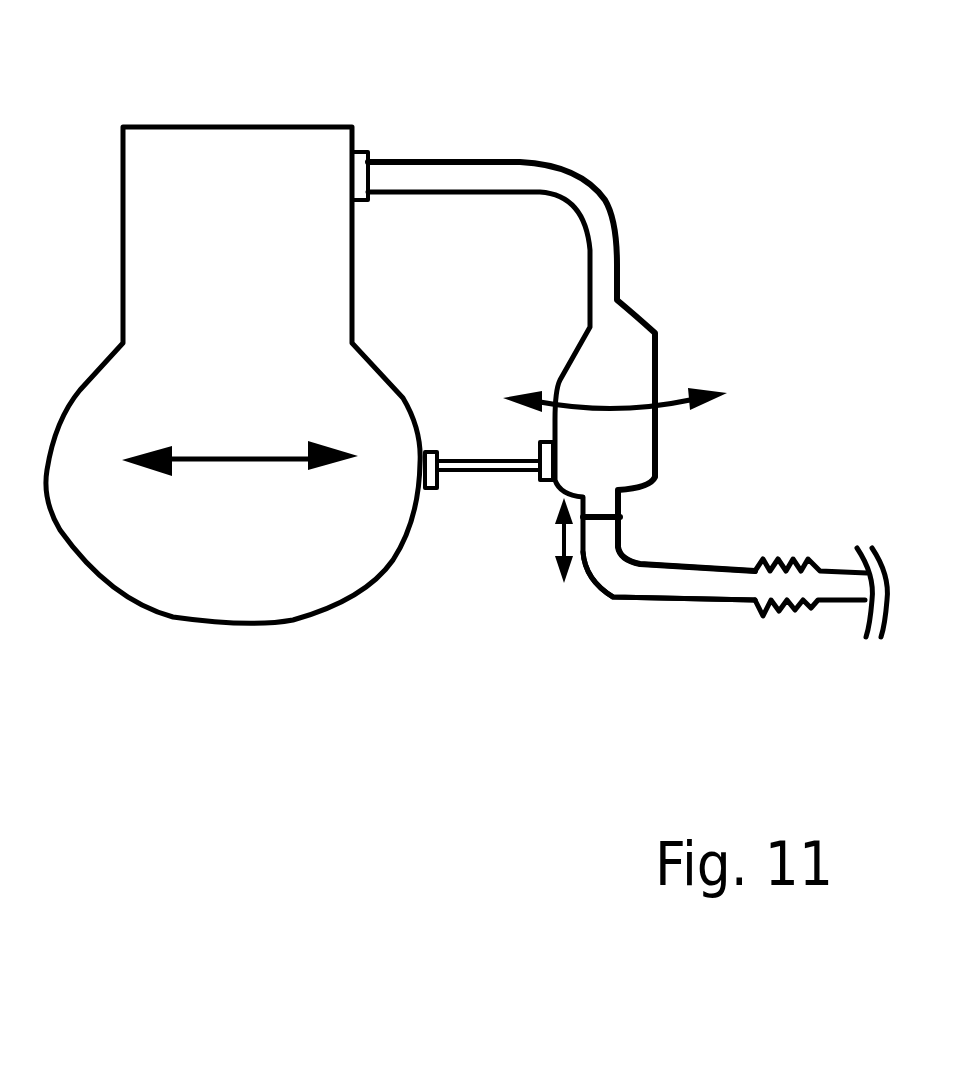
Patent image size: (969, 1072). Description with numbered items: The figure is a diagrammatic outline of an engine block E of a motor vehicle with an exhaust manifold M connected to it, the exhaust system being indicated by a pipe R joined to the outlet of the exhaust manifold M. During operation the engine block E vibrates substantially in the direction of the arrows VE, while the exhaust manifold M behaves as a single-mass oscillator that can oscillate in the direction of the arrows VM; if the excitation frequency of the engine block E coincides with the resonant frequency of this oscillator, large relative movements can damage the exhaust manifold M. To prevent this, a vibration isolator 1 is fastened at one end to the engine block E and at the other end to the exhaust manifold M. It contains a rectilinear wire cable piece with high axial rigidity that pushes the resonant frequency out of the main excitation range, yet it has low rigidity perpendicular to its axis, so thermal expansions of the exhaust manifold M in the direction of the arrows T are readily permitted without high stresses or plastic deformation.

The engine block E is at (219, 238).
The exhaust manifold M is at (620, 327).
The arrows V_E VE is at (227, 460).
The arrows V_M VM is at (618, 413).
The vibration isolator 1 is at (472, 530).
The arrows T is at (560, 540).
The pipe R is at (603, 548).